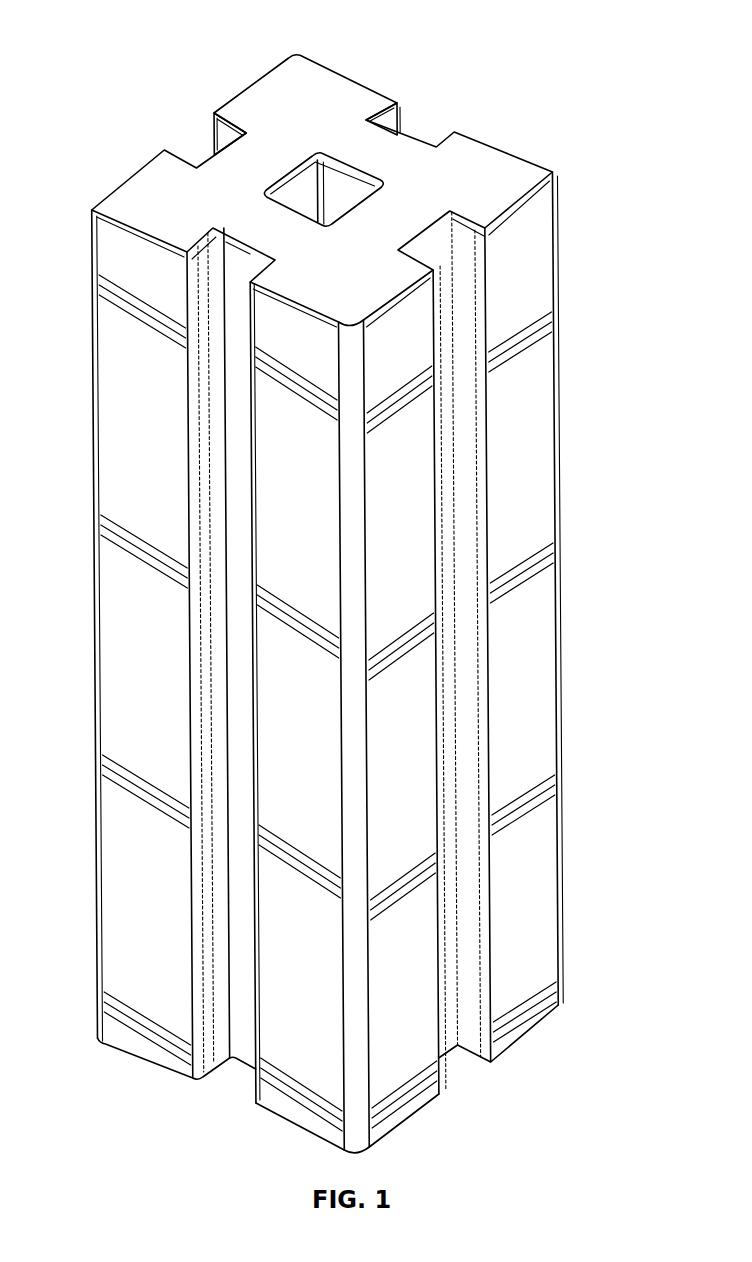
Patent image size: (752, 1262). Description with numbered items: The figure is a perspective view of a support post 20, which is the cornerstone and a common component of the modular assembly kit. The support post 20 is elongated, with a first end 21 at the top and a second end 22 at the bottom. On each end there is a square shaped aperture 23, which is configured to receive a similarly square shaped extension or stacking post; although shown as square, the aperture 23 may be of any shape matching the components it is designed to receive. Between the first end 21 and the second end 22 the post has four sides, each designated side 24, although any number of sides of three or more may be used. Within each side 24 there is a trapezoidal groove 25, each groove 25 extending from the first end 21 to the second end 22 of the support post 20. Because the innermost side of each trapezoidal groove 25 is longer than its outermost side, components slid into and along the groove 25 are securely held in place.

The support post 20 is at (601, 520).
The first end 21 is at (512, 172).
The second end 22 is at (406, 1122).
The square shaped aperture 23 is at (357, 193).
The side 24 is at (347, 78).
The trapezoidal groove 25 is at (427, 118).